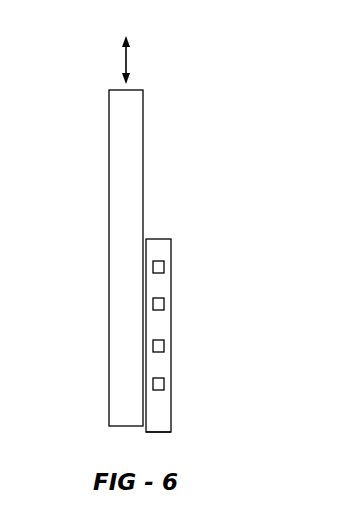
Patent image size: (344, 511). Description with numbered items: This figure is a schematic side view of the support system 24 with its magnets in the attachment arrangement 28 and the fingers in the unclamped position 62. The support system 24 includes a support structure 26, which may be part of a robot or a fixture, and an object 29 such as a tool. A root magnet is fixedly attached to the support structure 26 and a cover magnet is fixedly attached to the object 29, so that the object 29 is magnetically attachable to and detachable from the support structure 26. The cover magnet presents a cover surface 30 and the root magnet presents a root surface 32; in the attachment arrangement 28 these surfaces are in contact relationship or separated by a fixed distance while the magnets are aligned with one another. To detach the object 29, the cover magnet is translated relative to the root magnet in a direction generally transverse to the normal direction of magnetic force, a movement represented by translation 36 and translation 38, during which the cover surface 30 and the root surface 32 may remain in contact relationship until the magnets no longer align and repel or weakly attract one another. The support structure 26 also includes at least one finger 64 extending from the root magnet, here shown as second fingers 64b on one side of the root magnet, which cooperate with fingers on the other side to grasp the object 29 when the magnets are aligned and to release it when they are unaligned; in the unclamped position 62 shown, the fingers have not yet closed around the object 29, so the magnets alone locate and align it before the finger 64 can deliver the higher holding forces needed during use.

The support system 24 is at (158, 124).
The support structure 26 is at (165, 422).
The attachment arrangement 28 is at (176, 182).
The object 29 is at (118, 136).
The cover surface 30 is at (147, 414).
The root surface 32 is at (142, 398).
The translation 36 is at (124, 57).
The translation 38 is at (97, 297).
The unclamped position 62 is at (62, 146).
The finger 64 is at (181, 232).
The second finger 64b is at (164, 268).